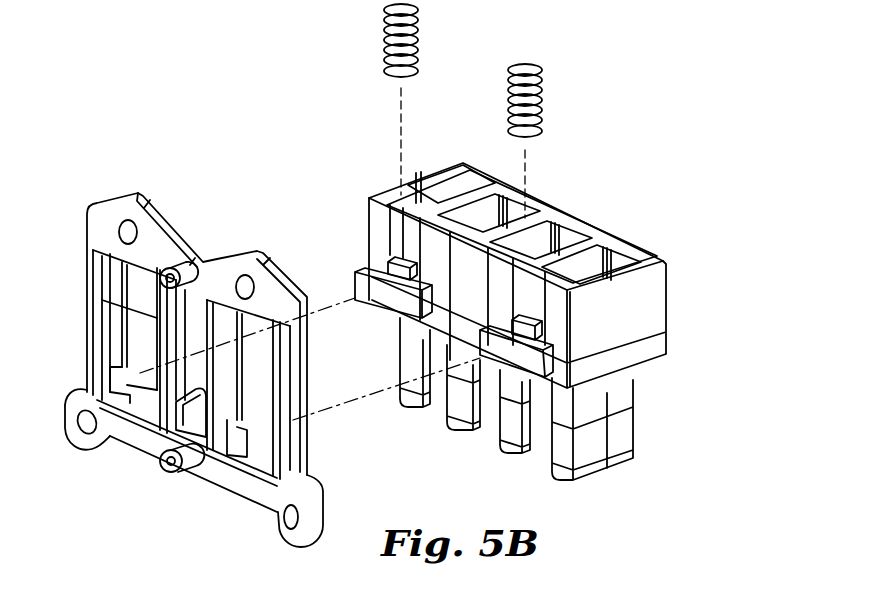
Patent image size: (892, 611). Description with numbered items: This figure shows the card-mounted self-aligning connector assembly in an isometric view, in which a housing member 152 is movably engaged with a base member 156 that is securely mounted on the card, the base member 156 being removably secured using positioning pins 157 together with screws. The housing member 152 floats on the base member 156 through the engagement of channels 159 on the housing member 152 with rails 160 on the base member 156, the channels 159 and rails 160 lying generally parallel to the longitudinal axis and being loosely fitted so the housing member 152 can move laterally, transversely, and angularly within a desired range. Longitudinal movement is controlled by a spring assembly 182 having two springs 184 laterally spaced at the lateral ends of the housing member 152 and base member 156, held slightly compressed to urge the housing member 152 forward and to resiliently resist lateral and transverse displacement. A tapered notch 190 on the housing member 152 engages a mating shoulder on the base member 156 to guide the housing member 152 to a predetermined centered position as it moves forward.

The housing member 152 is at (657, 300).
The base member 156 is at (108, 215).
The positioning pins 157 is at (172, 472).
The channels 159 is at (377, 265).
The rails 160 is at (122, 350).
The spring assembly 182 is at (640, 153).
The springs 184 is at (420, 33).
The tapered notch 190 is at (508, 351).